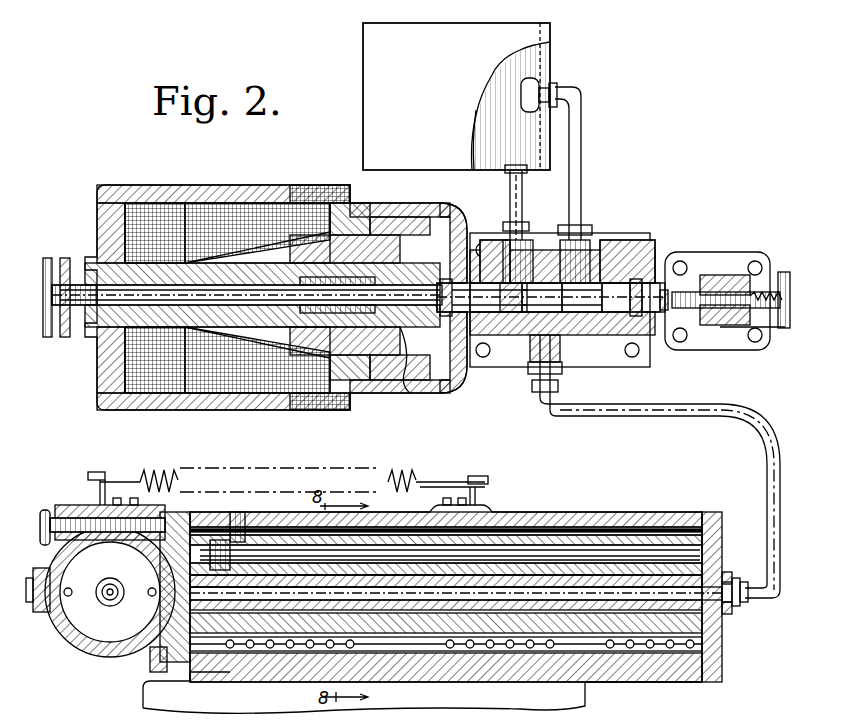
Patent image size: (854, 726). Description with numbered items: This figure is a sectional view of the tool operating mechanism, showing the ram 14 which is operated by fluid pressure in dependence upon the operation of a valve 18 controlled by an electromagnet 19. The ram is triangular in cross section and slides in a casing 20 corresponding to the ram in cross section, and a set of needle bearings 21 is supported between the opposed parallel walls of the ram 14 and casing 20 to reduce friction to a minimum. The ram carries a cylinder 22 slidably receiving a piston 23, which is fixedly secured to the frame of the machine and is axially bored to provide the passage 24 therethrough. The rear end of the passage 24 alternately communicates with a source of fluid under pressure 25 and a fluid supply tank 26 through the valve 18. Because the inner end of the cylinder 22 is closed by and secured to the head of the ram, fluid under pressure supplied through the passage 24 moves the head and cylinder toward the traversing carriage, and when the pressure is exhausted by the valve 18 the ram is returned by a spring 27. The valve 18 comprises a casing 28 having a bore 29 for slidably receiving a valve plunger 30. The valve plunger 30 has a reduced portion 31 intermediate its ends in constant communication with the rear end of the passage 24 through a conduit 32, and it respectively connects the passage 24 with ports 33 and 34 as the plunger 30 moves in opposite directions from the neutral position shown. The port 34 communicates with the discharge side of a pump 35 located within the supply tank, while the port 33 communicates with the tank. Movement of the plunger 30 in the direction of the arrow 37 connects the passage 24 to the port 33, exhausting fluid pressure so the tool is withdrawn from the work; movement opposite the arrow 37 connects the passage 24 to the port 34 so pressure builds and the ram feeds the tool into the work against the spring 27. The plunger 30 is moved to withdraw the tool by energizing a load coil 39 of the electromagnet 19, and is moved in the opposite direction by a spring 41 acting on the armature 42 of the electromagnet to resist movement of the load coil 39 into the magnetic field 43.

The ram 14 is at (72, 650).
The valve 18 is at (613, 268).
The electromagnet 19 is at (272, 184).
The casing 20 is at (645, 682).
The needle bearings 21 is at (620, 678).
The cylinder 22 is at (500, 582).
The piston 23 is at (565, 580).
The passage 24 is at (610, 585).
The source of fluid under pressure 25 is at (510, 195).
The fluid supply tank 26 is at (365, 102).
The spring 27 is at (415, 472).
The casing 28 is at (598, 335).
The bore 29 is at (512, 320).
The valve plunger 30 is at (656, 290).
The reduced portion 31 is at (545, 270).
The conduit 32 is at (687, 417).
The port 33 is at (512, 278).
The port 34 is at (594, 296).
The pump 35 is at (521, 95).
The arrow 37 is at (478, 300).
The load coil 39 is at (376, 240).
The spring 41 is at (398, 290).
The armature 42 is at (408, 327).
The magnetic field 43 is at (318, 372).